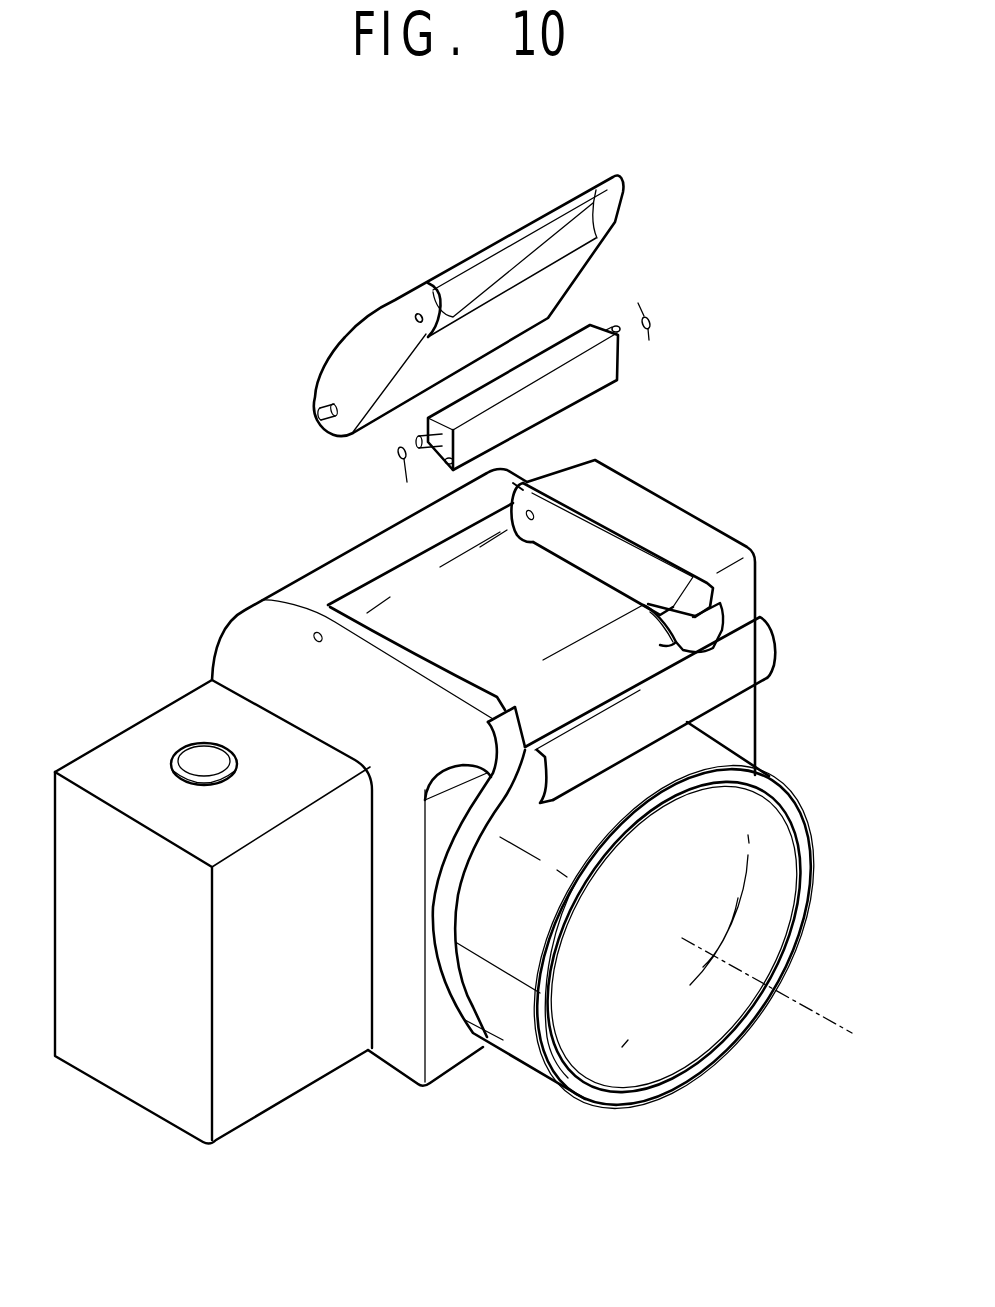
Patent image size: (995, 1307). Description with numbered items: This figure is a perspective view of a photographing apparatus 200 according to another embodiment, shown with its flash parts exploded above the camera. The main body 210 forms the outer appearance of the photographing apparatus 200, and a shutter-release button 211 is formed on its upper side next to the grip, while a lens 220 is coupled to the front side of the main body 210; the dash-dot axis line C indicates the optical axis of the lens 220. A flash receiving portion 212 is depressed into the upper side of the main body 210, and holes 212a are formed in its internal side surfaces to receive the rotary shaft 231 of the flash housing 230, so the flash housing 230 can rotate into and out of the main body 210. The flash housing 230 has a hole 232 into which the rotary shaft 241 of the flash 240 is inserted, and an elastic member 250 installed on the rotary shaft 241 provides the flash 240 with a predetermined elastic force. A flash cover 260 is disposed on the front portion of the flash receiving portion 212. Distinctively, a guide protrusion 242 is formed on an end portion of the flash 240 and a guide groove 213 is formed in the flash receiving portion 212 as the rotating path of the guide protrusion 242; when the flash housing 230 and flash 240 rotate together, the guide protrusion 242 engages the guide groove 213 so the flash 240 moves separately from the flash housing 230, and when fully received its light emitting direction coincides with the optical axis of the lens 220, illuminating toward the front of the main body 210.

The photographing apparatus 200 is at (157, 577).
The main body 210 is at (102, 1160).
The shutter-release button 211 is at (198, 755).
The flash receiving portion 212 is at (703, 448).
The holes 212a is at (560, 452).
The guide groove 213 is at (672, 622).
The lens 220 is at (745, 1158).
The flash housing 230 is at (436, 305).
The rotary shaft 231 is at (294, 363).
The hole 232 is at (420, 314).
The flash 240 is at (512, 375).
The rotary shaft 241 is at (619, 326).
The guide protrusion 242 is at (386, 485).
The elastic member 250 is at (712, 318).
The flash cover 260 is at (818, 728).
The optical axis of lens C is at (782, 996).